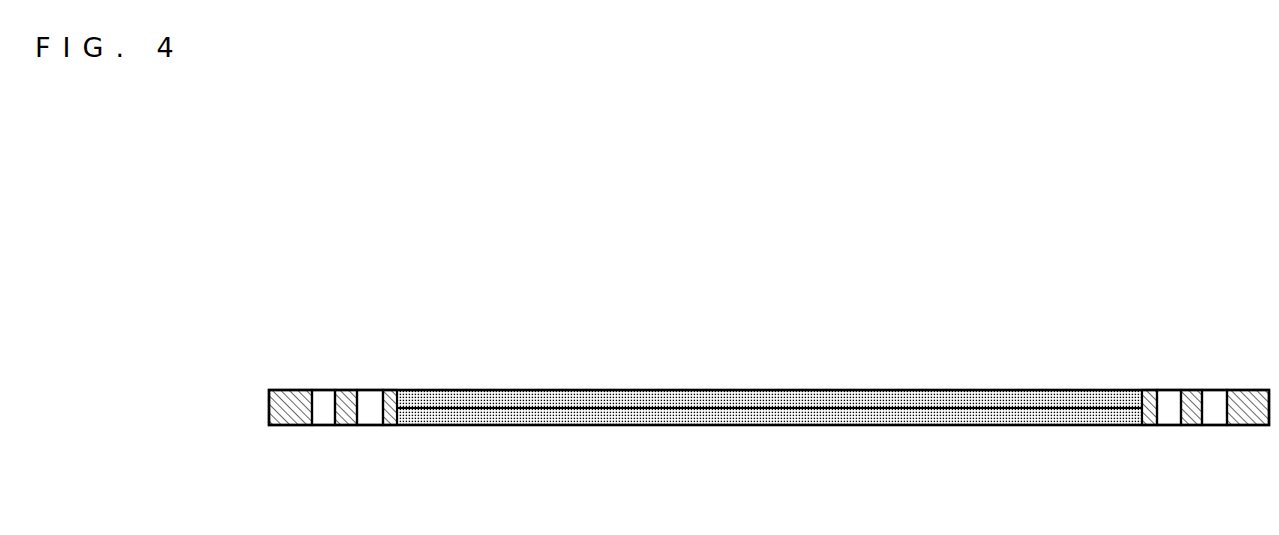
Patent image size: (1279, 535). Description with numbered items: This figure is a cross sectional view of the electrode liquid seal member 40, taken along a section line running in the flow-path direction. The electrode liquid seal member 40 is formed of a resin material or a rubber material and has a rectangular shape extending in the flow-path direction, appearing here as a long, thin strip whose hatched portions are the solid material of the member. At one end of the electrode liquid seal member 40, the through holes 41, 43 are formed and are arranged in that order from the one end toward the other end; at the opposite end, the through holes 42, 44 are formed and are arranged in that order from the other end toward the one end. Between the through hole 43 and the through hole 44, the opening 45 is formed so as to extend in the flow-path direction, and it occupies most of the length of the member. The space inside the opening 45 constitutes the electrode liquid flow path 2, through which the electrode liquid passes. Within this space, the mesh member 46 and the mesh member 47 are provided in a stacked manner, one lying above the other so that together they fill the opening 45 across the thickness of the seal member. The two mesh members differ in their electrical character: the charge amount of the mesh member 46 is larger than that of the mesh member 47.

The electrode liquid flow path 2 is at (597, 412).
The electrode liquid seal member 40 is at (270, 407).
The through hole 41 is at (336, 407).
The through hole 42 is at (1203, 407).
The through hole 43 is at (382, 407).
The through hole 44 is at (1158, 407).
The opening 45 is at (398, 400).
The mesh member 46 is at (769, 390).
The mesh member 47 is at (769, 425).